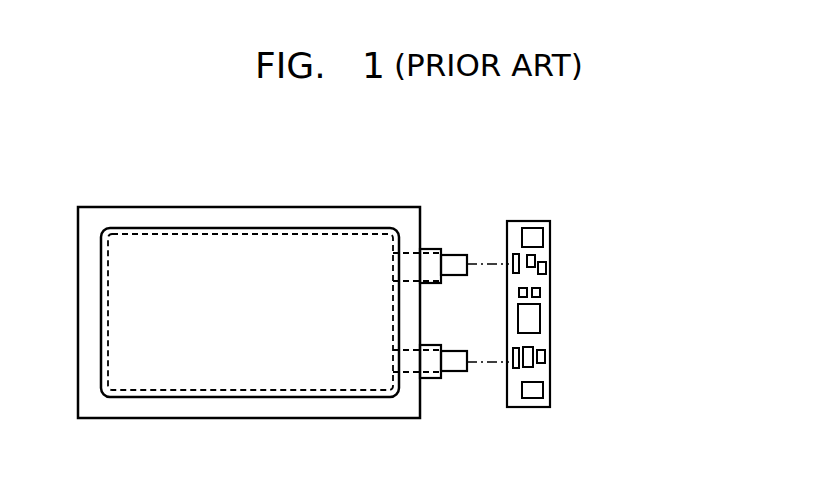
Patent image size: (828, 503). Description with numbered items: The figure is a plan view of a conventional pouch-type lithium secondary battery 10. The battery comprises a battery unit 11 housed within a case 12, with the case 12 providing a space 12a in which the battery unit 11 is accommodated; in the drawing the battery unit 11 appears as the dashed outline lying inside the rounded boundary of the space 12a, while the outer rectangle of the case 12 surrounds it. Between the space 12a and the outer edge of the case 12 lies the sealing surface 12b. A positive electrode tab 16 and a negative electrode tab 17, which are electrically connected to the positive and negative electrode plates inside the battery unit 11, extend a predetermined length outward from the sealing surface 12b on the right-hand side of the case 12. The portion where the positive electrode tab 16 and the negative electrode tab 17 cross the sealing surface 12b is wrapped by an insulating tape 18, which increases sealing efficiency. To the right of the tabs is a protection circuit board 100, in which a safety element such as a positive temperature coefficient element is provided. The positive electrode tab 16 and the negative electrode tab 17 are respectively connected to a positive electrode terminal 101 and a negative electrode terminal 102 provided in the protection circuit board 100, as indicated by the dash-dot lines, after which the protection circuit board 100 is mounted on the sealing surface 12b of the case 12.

The lithium secondary battery 10 is at (394, 187).
The battery unit 11 is at (208, 246).
The case 12 is at (335, 220).
The space 12a is at (287, 235).
The sealing surface 12b is at (413, 311).
The positive electrode tab 16 is at (459, 262).
The negative electrode tab 17 is at (458, 371).
The insulating tape 18 is at (436, 248).
The protection circuit board 100 is at (541, 220).
The positive electrode terminal 101 is at (512, 262).
The negative electrode terminal 102 is at (512, 364).